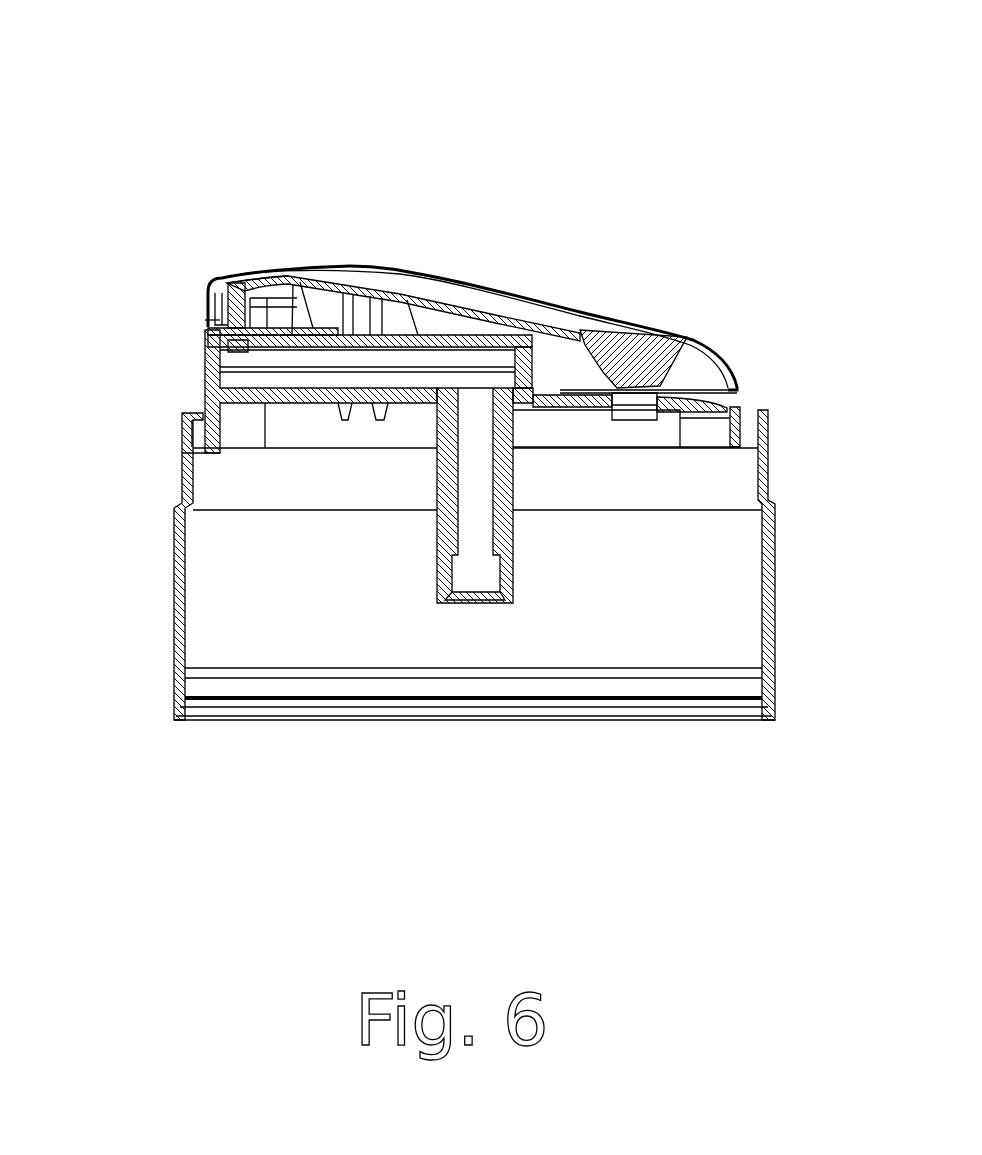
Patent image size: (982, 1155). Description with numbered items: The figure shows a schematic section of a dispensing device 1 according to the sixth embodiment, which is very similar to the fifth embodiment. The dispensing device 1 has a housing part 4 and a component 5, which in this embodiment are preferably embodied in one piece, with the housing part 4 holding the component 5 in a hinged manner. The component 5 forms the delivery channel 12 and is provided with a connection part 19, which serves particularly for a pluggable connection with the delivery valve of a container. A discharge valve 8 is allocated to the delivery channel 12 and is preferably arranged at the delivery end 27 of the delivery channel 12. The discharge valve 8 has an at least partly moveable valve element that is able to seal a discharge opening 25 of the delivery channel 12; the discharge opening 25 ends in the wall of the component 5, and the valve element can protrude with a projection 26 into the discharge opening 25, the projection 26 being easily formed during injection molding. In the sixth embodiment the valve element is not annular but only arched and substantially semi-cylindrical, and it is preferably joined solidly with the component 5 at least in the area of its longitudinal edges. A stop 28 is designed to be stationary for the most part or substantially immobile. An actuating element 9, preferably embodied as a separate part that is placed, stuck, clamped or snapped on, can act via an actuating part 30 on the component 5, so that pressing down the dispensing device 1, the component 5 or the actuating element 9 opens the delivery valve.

The dispensing device 1 is at (218, 230).
The housing part 4 is at (775, 549).
The component 5 is at (582, 336).
The discharge valve 8 is at (205, 318).
The actuating element 9 is at (500, 315).
The delivery channel 12 is at (250, 384).
The connection part 19 is at (513, 577).
The discharge opening 25 is at (255, 370).
The projection 26 is at (235, 343).
The delivery end 27 is at (215, 338).
The stop 28 is at (242, 268).
The actuating part 30 is at (630, 326).